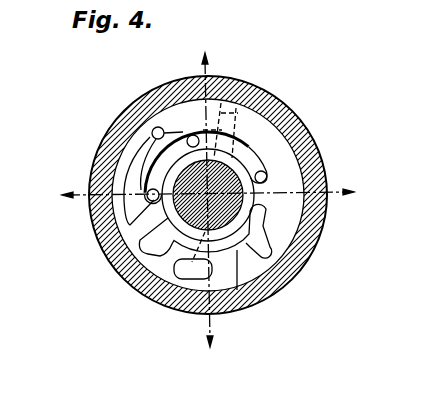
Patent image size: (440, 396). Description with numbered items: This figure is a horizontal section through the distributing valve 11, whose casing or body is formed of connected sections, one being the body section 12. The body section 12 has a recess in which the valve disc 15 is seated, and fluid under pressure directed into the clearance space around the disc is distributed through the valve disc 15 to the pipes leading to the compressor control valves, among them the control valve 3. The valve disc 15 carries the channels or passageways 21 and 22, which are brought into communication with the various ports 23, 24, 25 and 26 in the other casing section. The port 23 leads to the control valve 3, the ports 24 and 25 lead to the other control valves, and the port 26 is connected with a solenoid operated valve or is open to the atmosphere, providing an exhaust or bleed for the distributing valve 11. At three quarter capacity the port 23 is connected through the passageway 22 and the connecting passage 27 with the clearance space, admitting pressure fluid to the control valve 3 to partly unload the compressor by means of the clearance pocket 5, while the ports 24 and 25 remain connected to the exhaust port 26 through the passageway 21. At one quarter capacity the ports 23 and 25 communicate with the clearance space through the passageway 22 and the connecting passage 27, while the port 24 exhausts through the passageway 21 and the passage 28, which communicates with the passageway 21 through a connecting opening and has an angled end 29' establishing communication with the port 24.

The distributing valve 11 is at (307, 263).
The body section 12 is at (113, 249).
The valve disc 15 is at (278, 153).
The passageway 21 is at (199, 141).
The passageway 22 is at (237, 290).
The port 23 is at (147, 200).
The port 24 is at (152, 133).
The port 25 is at (222, 133).
The port 26 is at (267, 176).
The connecting passage 27 is at (265, 262).
The passage 28 is at (240, 133).
The angled end 29' is at (171, 284).
The control valve 3 is at (204, 194).
The clearance pocket 5 is at (206, 203).